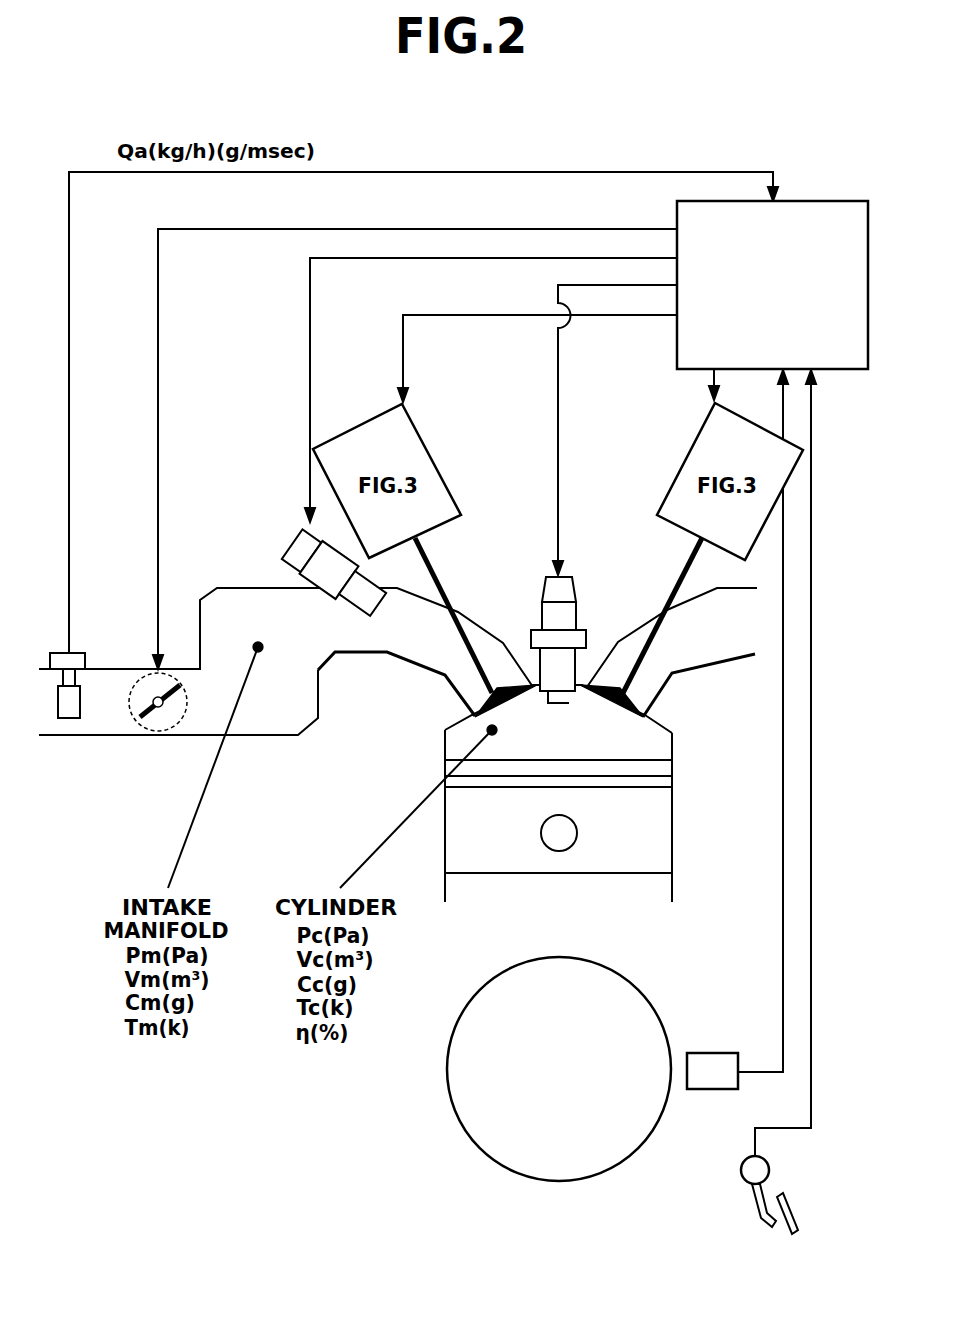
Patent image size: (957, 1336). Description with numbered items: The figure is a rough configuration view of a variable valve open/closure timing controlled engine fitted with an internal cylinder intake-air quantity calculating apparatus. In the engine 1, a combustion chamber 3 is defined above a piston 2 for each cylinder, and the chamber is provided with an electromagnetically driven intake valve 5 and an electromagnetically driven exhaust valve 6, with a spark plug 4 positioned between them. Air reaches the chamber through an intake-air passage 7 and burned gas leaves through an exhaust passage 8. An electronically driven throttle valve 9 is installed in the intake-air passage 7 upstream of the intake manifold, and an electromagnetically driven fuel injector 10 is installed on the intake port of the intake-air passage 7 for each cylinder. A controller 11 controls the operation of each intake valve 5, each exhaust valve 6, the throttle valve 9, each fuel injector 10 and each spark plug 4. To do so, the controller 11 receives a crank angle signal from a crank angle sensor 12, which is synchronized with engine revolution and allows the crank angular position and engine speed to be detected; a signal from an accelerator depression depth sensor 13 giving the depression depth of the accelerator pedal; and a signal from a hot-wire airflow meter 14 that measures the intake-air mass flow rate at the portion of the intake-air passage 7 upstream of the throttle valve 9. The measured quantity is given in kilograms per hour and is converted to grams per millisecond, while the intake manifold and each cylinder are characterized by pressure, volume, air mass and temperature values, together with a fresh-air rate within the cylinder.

The engine 1 is at (695, 781).
The piston 2 is at (643, 842).
The combustion chamber 3 is at (657, 743).
The spark plug 4 is at (578, 617).
The intake valve 5 is at (437, 574).
The exhaust valve 6 is at (682, 573).
The intake-air passage 7 is at (353, 640).
The exhaust passage 8 is at (735, 638).
The electronically driven throttle valve 9 is at (152, 730).
The fuel injector 10 is at (297, 547).
The controller 11 is at (821, 201).
The crank angle sensor 12 is at (710, 1053).
The accelerator depression depth sensor 13 is at (740, 1168).
The hot-wire airflow meter 14 is at (80, 650).